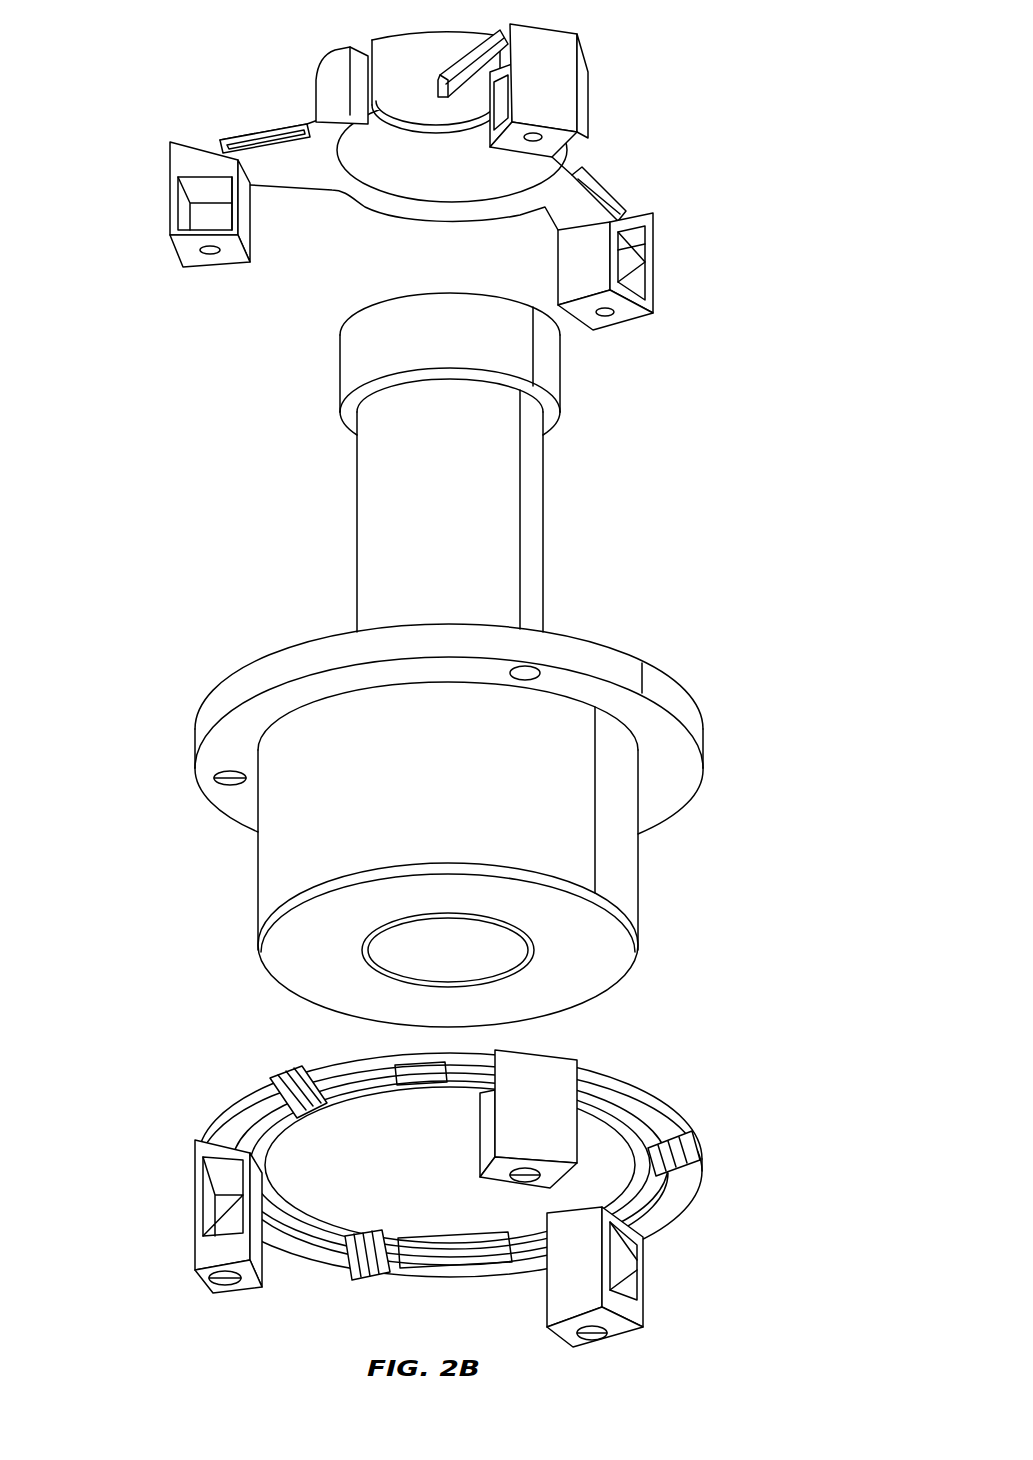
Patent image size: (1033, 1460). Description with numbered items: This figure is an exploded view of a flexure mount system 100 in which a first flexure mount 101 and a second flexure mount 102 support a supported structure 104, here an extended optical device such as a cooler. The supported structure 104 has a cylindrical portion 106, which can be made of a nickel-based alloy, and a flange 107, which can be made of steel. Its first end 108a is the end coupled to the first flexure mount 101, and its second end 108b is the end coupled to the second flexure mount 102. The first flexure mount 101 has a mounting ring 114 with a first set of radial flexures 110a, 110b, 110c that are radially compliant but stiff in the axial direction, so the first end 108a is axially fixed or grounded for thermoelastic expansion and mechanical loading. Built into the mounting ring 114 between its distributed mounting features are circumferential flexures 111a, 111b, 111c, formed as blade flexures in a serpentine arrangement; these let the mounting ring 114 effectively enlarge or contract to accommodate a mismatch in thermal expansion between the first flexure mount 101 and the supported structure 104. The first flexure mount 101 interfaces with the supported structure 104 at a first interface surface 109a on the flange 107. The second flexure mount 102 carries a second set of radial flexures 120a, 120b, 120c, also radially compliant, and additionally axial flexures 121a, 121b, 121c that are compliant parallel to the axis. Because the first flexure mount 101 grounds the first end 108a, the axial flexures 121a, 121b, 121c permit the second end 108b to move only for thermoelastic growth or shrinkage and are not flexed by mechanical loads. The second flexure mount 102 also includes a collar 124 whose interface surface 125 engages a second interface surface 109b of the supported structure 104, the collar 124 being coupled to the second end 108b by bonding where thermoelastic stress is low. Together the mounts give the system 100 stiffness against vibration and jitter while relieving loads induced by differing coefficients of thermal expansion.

The flexure mount system 100 is at (245, 45).
The first flexure mount 101 is at (693, 1060).
The second flexure mount 102 is at (634, 66).
The supported structure 104 is at (326, 512).
The cylindrical portion 106 is at (368, 575).
The flange 107 is at (206, 717).
The first end 108a is at (684, 957).
The second end 108b is at (298, 327).
The first interface surface 109a is at (206, 762).
The second interface surface 109b is at (360, 363).
The radial flexure 110a is at (658, 1262).
The radial flexure 110b is at (189, 1214).
The radial flexure 110c is at (470, 1120).
The flexure 111a is at (360, 1283).
The flexure 111b is at (312, 1125).
The flexure 111c is at (708, 1144).
The mounting ring 114 is at (232, 1100).
The radial flexure 120a is at (664, 262).
The radial flexure 120b is at (163, 197).
The radial flexure 120c is at (584, 92).
The axial flexure 121a is at (604, 180).
The axial flexure 121b is at (262, 128).
The axial flexure 121c is at (470, 50).
The collar 124 is at (372, 207).
The interface surface 125 is at (444, 183).